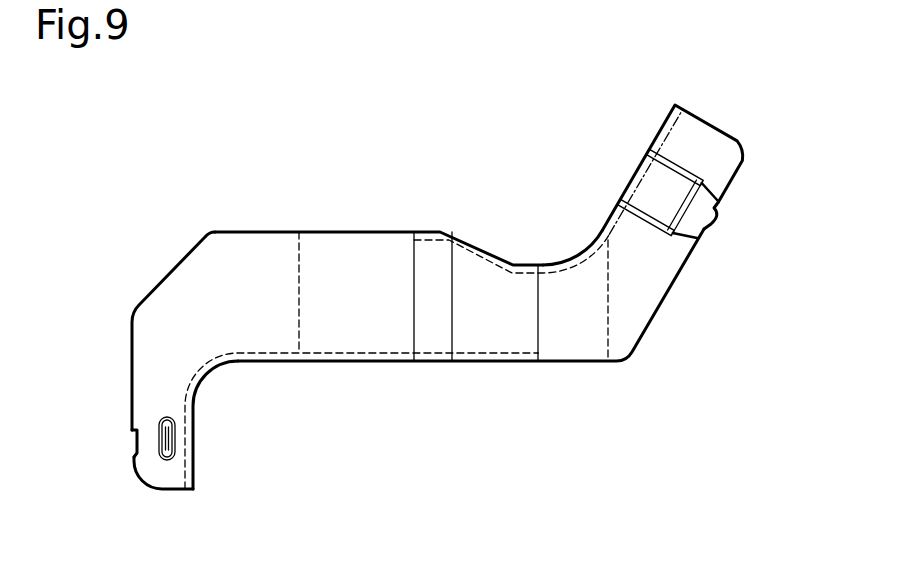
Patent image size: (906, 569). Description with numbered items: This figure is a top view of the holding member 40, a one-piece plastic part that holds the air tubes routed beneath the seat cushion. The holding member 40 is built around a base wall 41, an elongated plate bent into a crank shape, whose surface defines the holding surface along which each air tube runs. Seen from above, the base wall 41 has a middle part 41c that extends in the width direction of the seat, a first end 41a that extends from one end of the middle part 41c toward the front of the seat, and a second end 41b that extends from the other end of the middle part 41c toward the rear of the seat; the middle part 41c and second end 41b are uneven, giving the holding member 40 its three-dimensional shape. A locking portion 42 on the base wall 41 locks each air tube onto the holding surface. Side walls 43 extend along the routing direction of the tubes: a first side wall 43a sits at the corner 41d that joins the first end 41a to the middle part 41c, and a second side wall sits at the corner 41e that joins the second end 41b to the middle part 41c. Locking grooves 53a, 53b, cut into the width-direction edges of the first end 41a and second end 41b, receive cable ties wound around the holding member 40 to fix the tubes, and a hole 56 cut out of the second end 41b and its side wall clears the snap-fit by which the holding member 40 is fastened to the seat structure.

The holding member 40 is at (133, 117).
The base wall 41 is at (211, 232).
The first end 41a is at (156, 473).
The second end 41b is at (706, 124).
The middle part 41c is at (378, 242).
The corner 41d is at (213, 372).
The corner 41e is at (575, 258).
The locking portion 42 is at (297, 243).
The side walls 43 is at (224, 357).
The first side wall 43a is at (361, 421).
The locking groove 53a is at (132, 435).
The locking groove 53b is at (712, 214).
The hole 56 is at (665, 177).